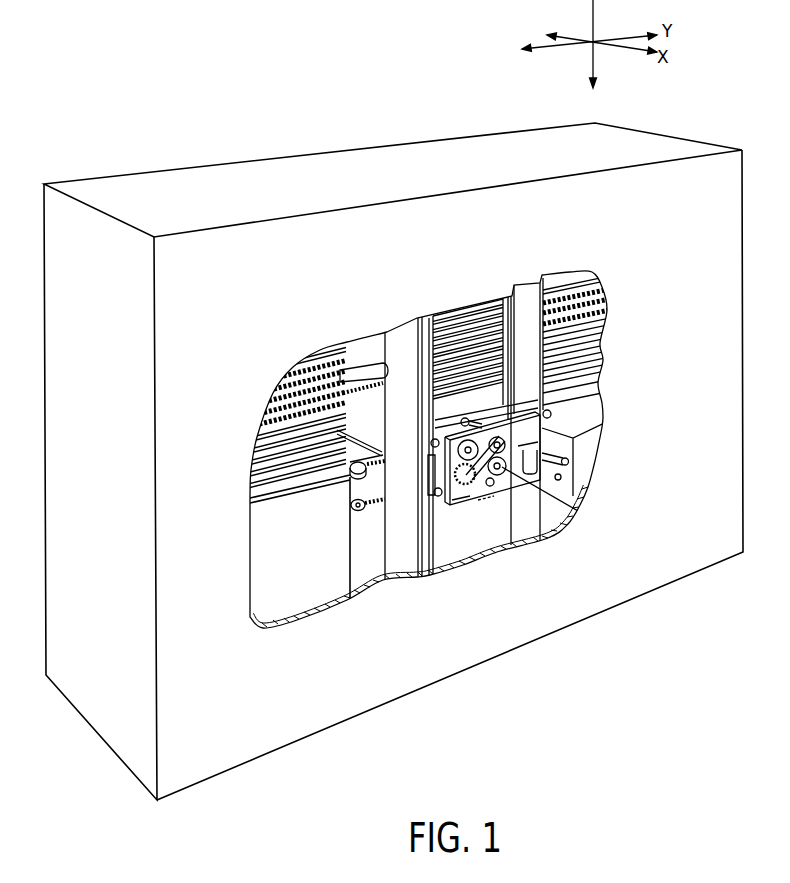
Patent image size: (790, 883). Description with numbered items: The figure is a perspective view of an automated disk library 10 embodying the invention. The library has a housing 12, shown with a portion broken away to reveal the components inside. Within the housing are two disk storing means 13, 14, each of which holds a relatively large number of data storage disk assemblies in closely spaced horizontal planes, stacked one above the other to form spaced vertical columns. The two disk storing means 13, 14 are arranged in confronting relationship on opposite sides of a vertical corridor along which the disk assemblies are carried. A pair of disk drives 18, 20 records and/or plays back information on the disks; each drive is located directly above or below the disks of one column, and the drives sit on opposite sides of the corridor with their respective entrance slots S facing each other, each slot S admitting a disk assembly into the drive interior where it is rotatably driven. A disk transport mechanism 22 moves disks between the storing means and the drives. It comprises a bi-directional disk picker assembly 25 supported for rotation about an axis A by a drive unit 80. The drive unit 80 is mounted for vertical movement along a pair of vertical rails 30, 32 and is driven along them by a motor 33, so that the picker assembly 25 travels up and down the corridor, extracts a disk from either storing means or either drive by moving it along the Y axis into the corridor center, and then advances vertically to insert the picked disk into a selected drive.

The automated disk library 10 is at (393, 440).
The housing 12 is at (662, 222).
The disk storing means 13 is at (256, 416).
The disk storing means 14 is at (607, 318).
The disk drive 18 is at (302, 564).
The disk drive 20 is at (592, 452).
The disk transport mechanism 22 is at (523, 492).
The bi-directional disk picker assembly 25 is at (369, 517).
The vertical rail 30 is at (403, 352).
The vertical rail 32 is at (522, 303).
The motor 33 is at (486, 500).
The drive unit 80 is at (468, 508).
The entrance slot S is at (290, 477).
The axis A is at (600, 527).